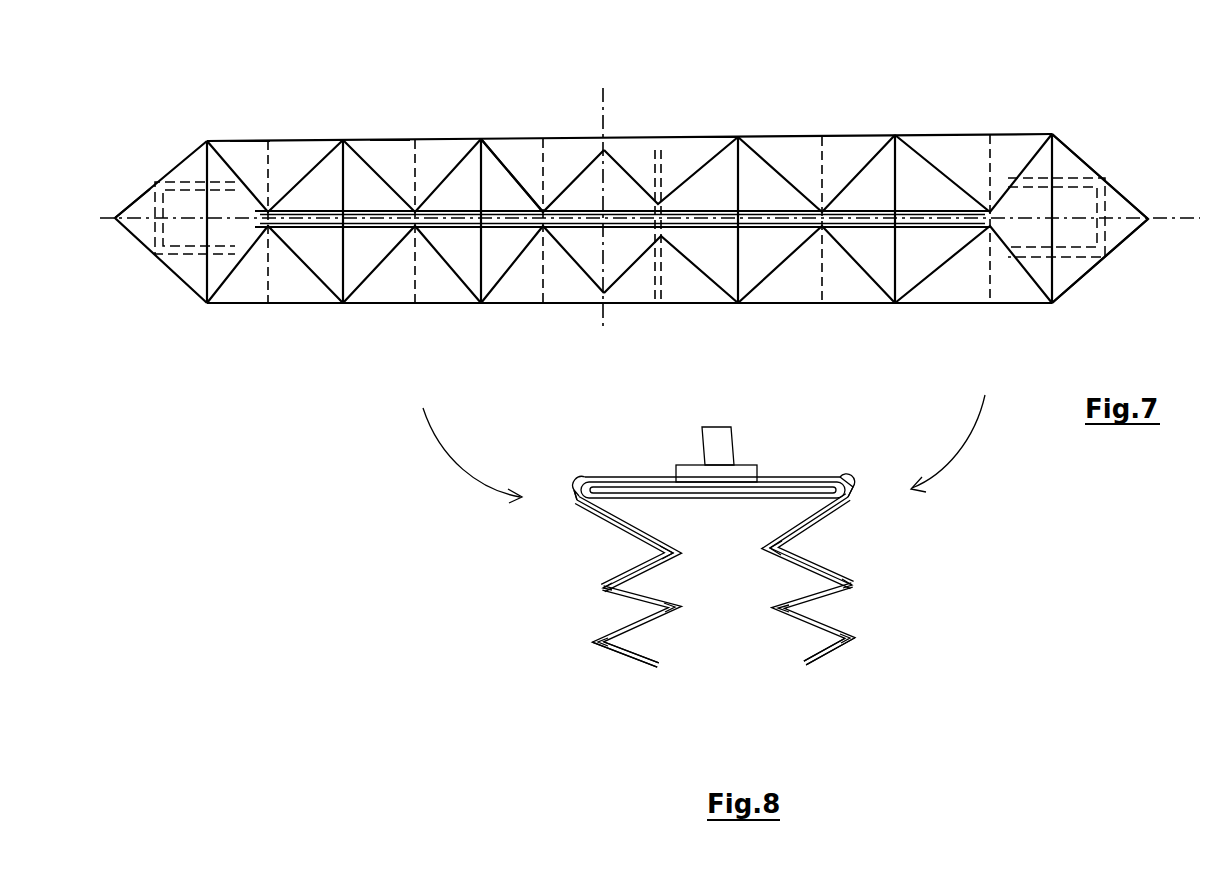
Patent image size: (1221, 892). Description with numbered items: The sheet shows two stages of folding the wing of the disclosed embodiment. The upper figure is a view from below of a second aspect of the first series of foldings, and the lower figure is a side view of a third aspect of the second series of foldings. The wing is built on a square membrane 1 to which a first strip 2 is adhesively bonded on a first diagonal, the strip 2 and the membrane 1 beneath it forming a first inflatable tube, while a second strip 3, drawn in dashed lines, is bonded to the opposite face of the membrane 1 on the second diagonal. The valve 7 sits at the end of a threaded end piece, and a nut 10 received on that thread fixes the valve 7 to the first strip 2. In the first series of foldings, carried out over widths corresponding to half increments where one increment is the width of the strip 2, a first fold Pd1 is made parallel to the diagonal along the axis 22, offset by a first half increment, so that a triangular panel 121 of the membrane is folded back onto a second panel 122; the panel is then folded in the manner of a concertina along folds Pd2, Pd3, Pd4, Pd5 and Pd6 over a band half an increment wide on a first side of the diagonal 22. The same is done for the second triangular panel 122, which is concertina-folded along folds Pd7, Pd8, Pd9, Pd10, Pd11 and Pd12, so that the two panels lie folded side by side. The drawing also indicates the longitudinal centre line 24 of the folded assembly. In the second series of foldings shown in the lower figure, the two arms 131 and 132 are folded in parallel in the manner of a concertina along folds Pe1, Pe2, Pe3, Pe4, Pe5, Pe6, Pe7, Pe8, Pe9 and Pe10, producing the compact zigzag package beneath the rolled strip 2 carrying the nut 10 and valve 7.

In FIG. 8, the membrane 1 is at (664, 618).
In FIG. 7, the first strip 2 is at (184, 232).
In FIG. 8, the first strip 2 is at (793, 478).
In FIG. 7, the second strip 3 is at (560, 160).
In FIG. 8, the valve 7 is at (720, 443).
In FIG. 8, the nut 10 is at (712, 474).
In FIG. 7, the axis 22 is at (100, 218).
In FIG. 7, the central axis 24 is at (602, 88).
In FIG. 7, the triangular panel 121 is at (973, 283).
In FIG. 7, the second panel 122 is at (1008, 145).
In FIG. 8, the arm 131 is at (622, 674).
In FIG. 8, the arm 132 is at (835, 678).
In FIG. 7, the first fold Pd1 is at (234, 306).
In FIG. 7, the fold Pd2 is at (322, 230).
In FIG. 7, the fold Pd3 is at (388, 305).
In FIG. 7, the fold Pd4 is at (468, 230).
In FIG. 7, the fold Pd5 is at (558, 302).
In FIG. 7, the fold Pd6 is at (623, 233).
In FIG. 7, the fold Pd7 is at (248, 140).
In FIG. 7, the fold Pd8 is at (333, 207).
In FIG. 7, the fold Pd9 is at (390, 138).
In FIG. 7, the fold Pd10 is at (776, 208).
In FIG. 7, the fold Pd11 is at (718, 137).
In FIG. 7, the fold Pd12 is at (622, 208).
In FIG. 8, the fold Pe1 is at (856, 498).
In FIG. 8, the fold Pe2 is at (771, 550).
In FIG. 8, the fold Pe3 is at (855, 585).
In FIG. 8, the fold Pe4 is at (778, 608).
In FIG. 8, the fold Pe5 is at (852, 638).
In FIG. 8, the fold Pe6 is at (579, 504).
In FIG. 8, the fold Pe7 is at (713, 560).
In FIG. 8, the fold Pe8 is at (600, 589).
In FIG. 8, the fold Pe9 is at (708, 614).
In FIG. 8, the fold Pe10 is at (598, 645).